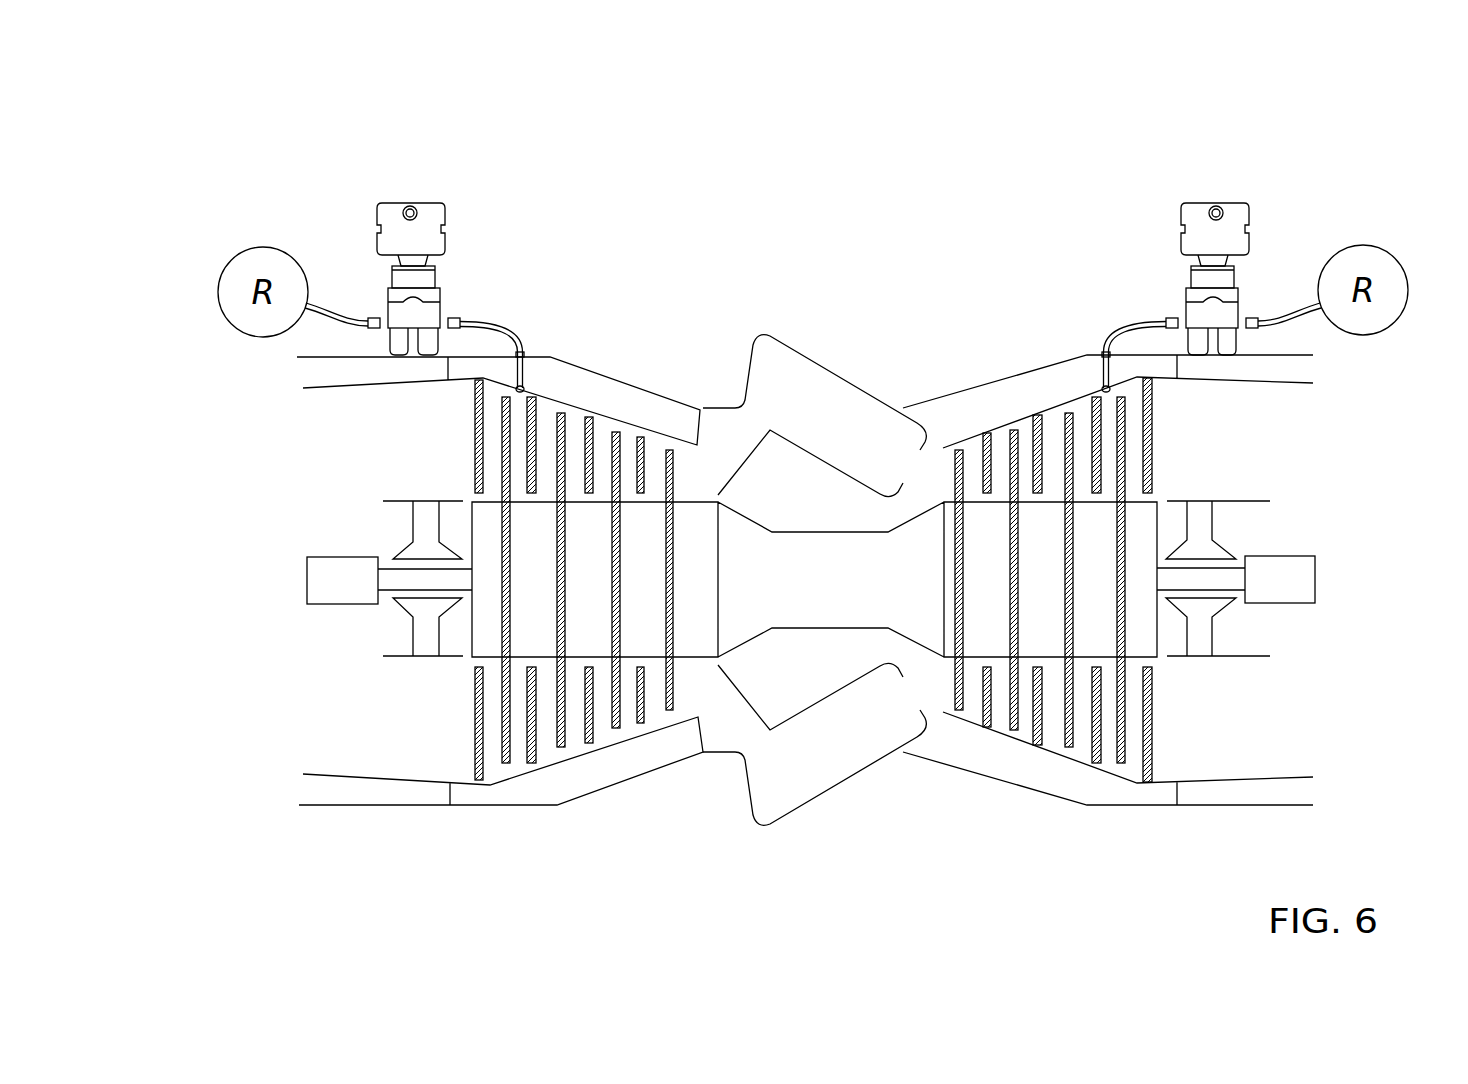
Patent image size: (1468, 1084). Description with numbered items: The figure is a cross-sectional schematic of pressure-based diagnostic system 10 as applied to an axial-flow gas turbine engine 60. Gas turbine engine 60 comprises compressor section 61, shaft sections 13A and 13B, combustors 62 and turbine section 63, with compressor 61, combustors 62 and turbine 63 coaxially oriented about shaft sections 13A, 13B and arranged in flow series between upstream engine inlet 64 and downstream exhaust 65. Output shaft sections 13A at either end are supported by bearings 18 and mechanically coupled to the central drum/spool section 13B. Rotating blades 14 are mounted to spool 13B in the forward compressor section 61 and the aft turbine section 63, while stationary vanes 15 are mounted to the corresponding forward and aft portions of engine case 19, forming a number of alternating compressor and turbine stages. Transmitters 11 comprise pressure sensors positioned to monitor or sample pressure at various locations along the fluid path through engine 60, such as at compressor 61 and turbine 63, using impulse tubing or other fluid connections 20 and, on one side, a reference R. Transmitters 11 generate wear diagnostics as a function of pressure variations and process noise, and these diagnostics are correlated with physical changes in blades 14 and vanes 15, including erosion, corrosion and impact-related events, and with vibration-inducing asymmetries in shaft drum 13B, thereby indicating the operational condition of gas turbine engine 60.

The pressure-based diagnostic system 10 is at (162, 136).
The axial-flow gas turbine engine 60 is at (919, 177).
The transmitter 11 is at (433, 200).
The fluid connection 20 is at (522, 343).
The rotating blade 14 is at (666, 460).
The stationary vane 15 is at (1092, 408).
The engine case 19 is at (995, 430).
The combustor 62 is at (840, 392).
The engine inlet 64 is at (233, 454).
The exhaust 65 is at (1405, 429).
The bearing 18 is at (430, 512).
The output shaft section 13A is at (348, 569).
The drum/spool section 13B is at (868, 603).
The compressor section 61 is at (611, 768).
The turbine section 63 is at (1015, 766).